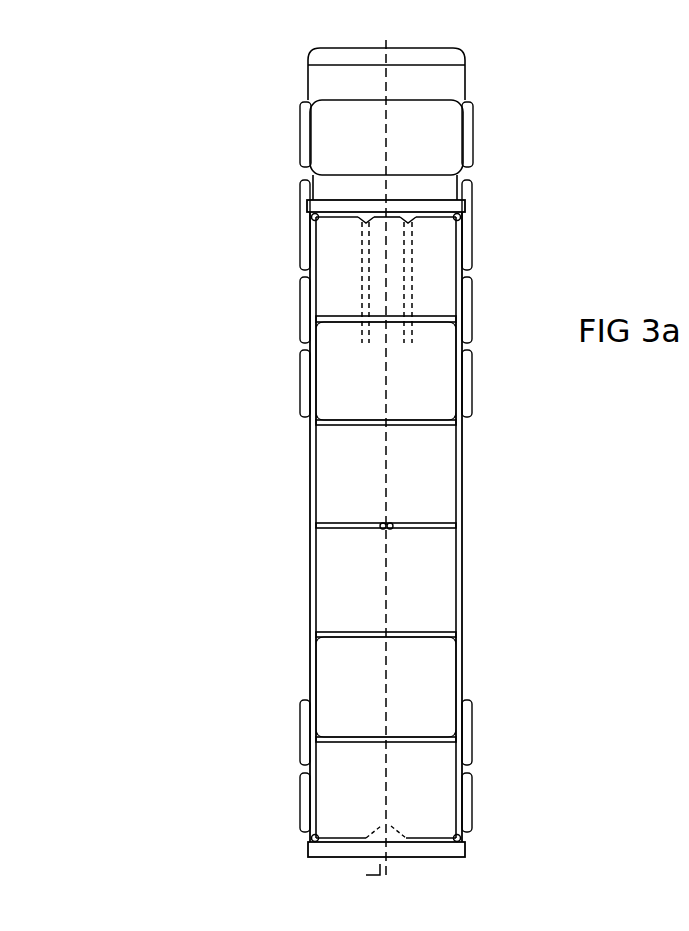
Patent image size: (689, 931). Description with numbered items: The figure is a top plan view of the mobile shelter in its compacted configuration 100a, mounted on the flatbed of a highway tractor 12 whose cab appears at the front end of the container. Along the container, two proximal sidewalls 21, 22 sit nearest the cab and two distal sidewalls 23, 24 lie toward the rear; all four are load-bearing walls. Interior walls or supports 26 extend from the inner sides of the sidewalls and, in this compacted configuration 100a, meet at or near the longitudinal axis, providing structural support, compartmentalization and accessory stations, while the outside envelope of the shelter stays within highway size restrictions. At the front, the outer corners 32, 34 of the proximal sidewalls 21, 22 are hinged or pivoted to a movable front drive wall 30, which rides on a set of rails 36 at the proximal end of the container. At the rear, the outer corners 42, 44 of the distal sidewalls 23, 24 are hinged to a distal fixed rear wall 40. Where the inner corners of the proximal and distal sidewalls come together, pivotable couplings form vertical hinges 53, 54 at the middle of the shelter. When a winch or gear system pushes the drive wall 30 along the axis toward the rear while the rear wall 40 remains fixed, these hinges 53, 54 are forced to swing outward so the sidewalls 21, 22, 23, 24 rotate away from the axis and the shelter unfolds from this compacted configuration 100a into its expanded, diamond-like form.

The compacted configuration 100a is at (240, 178).
The highway tractor 12 is at (437, 125).
The movable front drive wall 30 is at (420, 210).
The outer corner of proximal sidewall 32 is at (311, 218).
The outer corner of proximal sidewall 34 is at (465, 216).
The rails 36 is at (365, 282).
The supports 26 is at (303, 393).
The proximal sidewall 21 is at (310, 406).
The proximal sidewall 22 is at (462, 357).
The distal sidewall 23 is at (310, 675).
The distal sidewall 24 is at (463, 675).
The left hinge pin 53 is at (384, 527).
The vertical hinge 54 is at (390, 527).
The outer corner of distal sidewall 42 is at (311, 838).
The outer corner of distal sidewall 44 is at (461, 836).
The distal fixed rear wall 40 is at (466, 852).